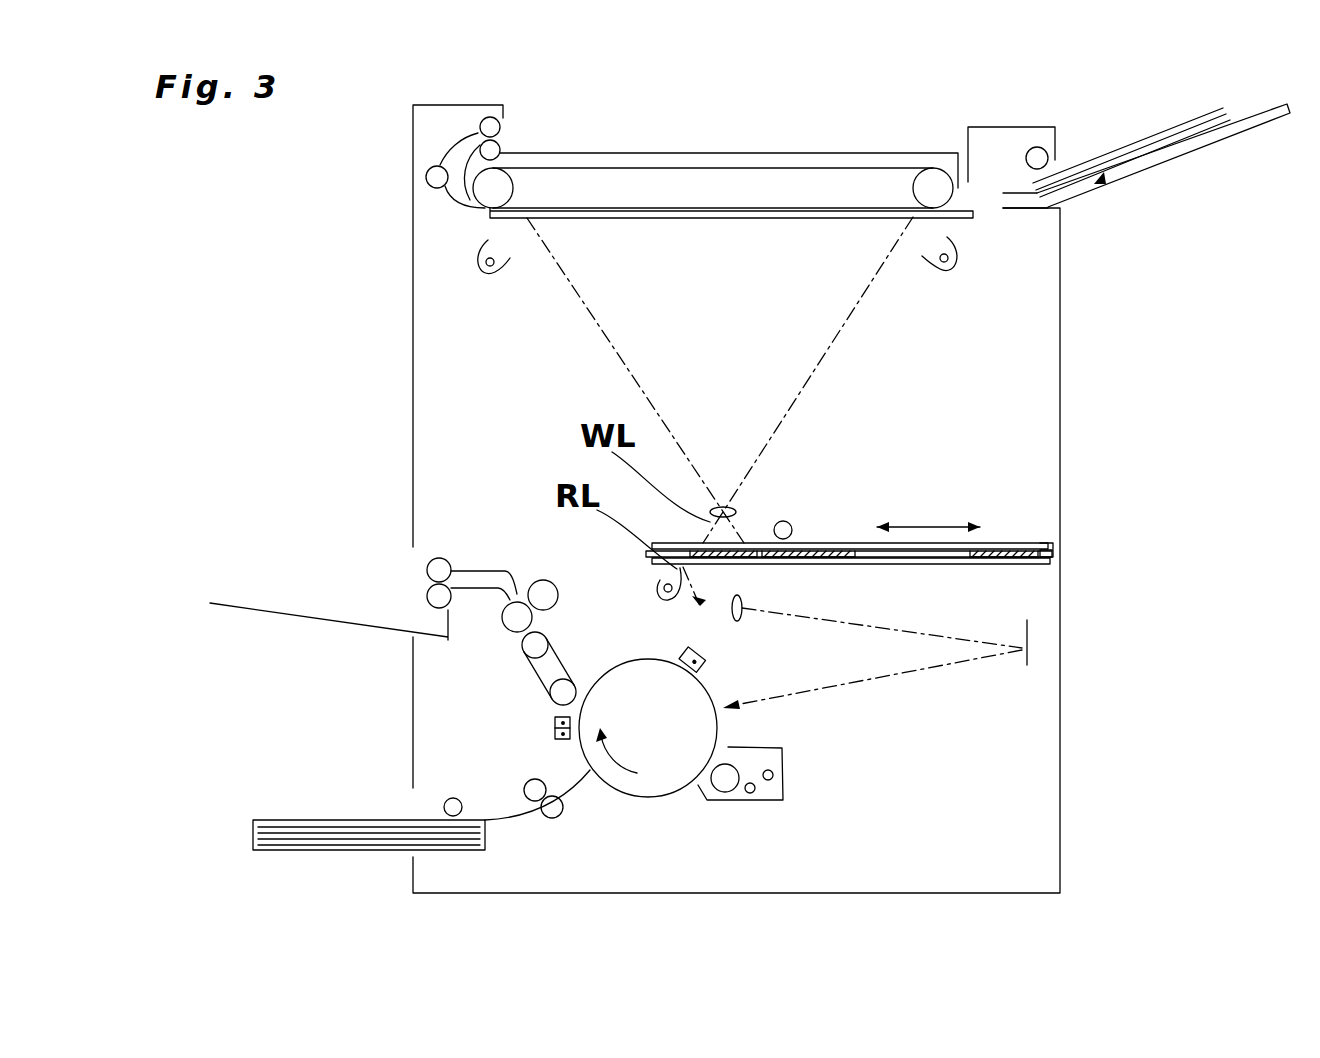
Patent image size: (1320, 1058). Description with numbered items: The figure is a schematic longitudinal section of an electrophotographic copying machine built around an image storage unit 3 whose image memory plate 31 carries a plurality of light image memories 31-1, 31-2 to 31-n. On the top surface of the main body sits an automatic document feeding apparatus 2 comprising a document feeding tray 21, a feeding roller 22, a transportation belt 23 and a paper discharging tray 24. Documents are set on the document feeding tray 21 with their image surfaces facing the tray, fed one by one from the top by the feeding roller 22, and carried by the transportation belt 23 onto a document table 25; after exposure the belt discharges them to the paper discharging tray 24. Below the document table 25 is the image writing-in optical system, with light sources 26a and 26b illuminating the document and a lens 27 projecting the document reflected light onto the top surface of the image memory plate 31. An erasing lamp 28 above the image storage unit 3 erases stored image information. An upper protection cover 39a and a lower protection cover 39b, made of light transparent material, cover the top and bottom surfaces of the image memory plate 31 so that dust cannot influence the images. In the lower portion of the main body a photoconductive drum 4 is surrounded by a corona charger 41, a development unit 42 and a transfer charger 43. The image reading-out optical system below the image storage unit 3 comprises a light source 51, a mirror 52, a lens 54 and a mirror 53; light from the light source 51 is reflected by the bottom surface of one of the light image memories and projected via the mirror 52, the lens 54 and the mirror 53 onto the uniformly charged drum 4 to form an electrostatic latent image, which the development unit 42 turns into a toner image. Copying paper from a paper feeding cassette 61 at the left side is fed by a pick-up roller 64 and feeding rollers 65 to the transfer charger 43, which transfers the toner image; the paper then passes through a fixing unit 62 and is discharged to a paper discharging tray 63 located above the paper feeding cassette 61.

The automatic document feeding apparatus 2 is at (884, 120).
The image storage unit 3 is at (936, 526).
The photoconductive drum 4 is at (662, 797).
The document feeding tray 21 is at (1258, 132).
The feeding roller 22 is at (1045, 148).
The transportation belt 23 is at (770, 153).
The paper discharging tray 24 is at (605, 152).
The document table 25 is at (740, 218).
The light source 26a is at (485, 275).
The light source 26b is at (950, 272).
The lens 27 is at (723, 506).
The erasing lamp 28 is at (785, 520).
The image memory plate 31 is at (925, 527).
The light image memory 31-1 is at (727, 558).
The light image memory 31-2 is at (827, 550).
The light image memory 31-n is at (1000, 560).
The upper protection cover 39a is at (1040, 545).
The lower protection cover 39b is at (1027, 562).
The corona charger 41 is at (683, 652).
The development unit 42 is at (784, 773).
The transfer charger 43 is at (553, 722).
The light source 51 is at (655, 596).
The mirror 52 is at (700, 609).
The mirror 53 is at (1028, 633).
The lens 54 is at (745, 614).
The paper feeding cassette 61 is at (340, 845).
The fixing unit 62 is at (545, 580).
The paper discharging tray 63 is at (280, 612).
The pick-up roller 64 is at (445, 800).
The feeding rollers 65 is at (552, 819).